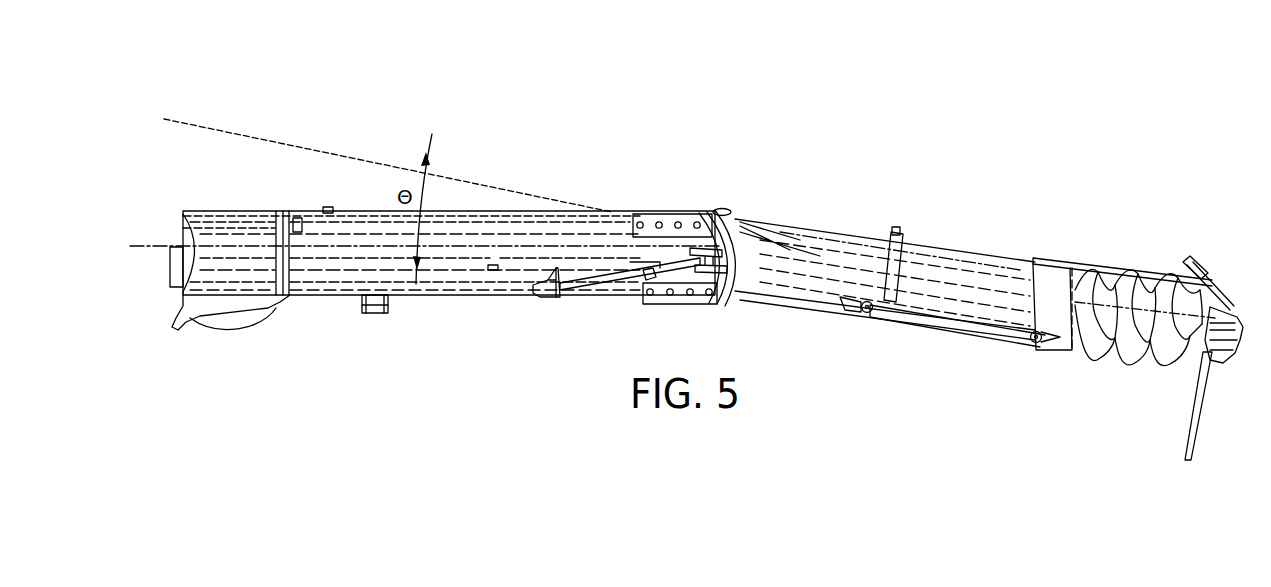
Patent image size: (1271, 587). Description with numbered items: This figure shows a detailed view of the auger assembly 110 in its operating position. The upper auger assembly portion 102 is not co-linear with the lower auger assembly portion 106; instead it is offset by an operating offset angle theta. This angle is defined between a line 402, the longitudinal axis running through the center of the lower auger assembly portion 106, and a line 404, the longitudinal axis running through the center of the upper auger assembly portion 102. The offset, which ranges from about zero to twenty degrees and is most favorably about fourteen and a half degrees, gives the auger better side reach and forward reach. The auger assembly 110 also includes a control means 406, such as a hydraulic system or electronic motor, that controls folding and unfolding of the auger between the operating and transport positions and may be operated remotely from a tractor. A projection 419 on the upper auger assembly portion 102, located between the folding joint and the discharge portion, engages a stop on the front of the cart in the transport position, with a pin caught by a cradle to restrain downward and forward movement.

The upper auger assembly portion 102 is at (478, 296).
The lower auger assembly portion 106 is at (849, 311).
The auger assembly 110 is at (806, 203).
The line 402 is at (187, 121).
The line 404 is at (152, 245).
The control means 406 is at (594, 297).
The projection 419 is at (375, 313).